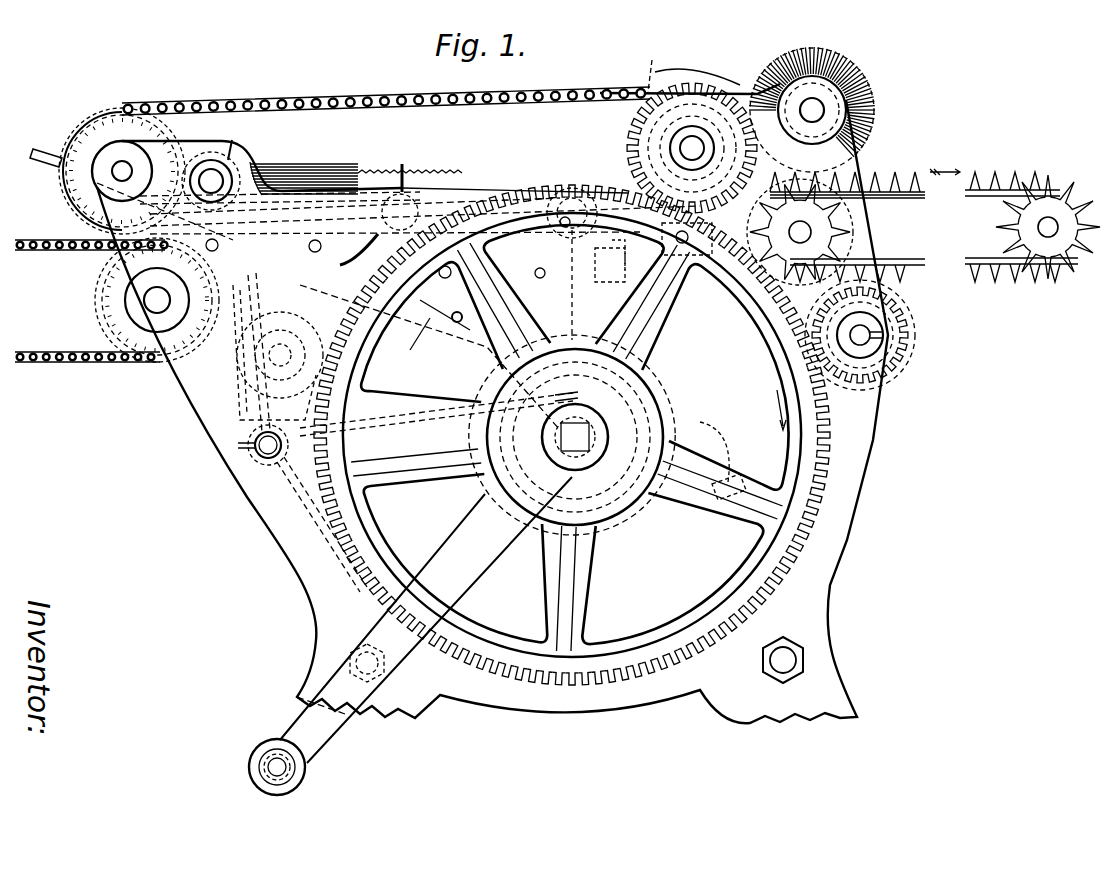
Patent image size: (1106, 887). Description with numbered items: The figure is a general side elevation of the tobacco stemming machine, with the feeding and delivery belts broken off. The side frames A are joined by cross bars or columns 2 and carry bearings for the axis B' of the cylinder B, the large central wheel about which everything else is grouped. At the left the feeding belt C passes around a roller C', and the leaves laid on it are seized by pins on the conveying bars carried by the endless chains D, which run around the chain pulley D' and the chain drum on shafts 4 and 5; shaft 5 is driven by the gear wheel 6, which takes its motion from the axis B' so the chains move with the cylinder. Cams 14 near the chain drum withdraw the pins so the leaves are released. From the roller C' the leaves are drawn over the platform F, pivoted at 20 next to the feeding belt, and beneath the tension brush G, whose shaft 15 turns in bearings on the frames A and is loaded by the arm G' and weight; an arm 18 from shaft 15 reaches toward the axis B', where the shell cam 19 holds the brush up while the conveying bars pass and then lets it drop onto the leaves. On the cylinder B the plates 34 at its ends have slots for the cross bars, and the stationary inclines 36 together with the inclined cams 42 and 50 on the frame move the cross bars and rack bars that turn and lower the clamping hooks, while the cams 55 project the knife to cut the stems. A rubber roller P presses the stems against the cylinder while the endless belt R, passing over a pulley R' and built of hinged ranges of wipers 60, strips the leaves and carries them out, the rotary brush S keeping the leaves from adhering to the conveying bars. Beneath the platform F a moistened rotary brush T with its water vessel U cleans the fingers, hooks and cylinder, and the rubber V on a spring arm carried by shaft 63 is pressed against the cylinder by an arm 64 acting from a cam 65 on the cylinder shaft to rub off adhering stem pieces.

The side frames A is at (459, 406).
The cylinder B is at (536, 412).
The axis of the cylinder B' is at (575, 437).
The rubber V is at (410, 534).
The cross bars or columns 2 is at (571, 458).
The chain pulley D' is at (122, 171).
The shaft of pulley D' 4 is at (125, 166).
The endless chains D is at (386, 111).
The shaft of tension brush 15 is at (211, 175).
The tension brush G is at (304, 167).
The arm G' is at (410, 187).
The platform F is at (287, 217).
The cam 14 is at (692, 92).
The shaft of pulley D² 5 is at (692, 148).
The gear wheel 6 is at (640, 100).
The rotary brush S is at (823, 100).
The endless belt R is at (865, 178).
The pulley R' is at (791, 229).
The wipers 60 is at (980, 288).
The rubber roller P is at (905, 355).
The feeding belt C is at (90, 301).
The roller C' is at (157, 300).
The pivot of platform 20 is at (218, 250).
The rotary brush T is at (278, 352).
The water vessel U is at (205, 380).
The shaft 63 is at (262, 458).
The arm 64 is at (436, 414).
The cam 65 is at (580, 394).
The plates 34 is at (445, 308).
The arm 18 is at (422, 341).
The inclined cams 42 is at (580, 264).
The cams 55 is at (510, 250).
The cam 19 is at (610, 335).
The stationary inclines 36 is at (722, 424).
The cam 50 is at (758, 474).